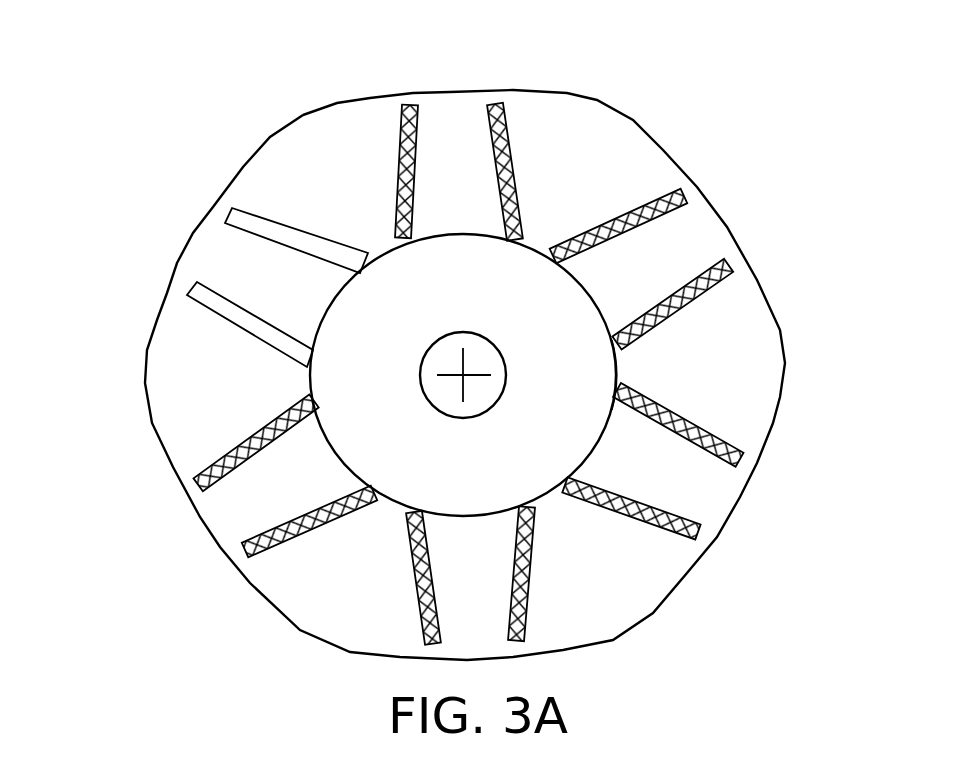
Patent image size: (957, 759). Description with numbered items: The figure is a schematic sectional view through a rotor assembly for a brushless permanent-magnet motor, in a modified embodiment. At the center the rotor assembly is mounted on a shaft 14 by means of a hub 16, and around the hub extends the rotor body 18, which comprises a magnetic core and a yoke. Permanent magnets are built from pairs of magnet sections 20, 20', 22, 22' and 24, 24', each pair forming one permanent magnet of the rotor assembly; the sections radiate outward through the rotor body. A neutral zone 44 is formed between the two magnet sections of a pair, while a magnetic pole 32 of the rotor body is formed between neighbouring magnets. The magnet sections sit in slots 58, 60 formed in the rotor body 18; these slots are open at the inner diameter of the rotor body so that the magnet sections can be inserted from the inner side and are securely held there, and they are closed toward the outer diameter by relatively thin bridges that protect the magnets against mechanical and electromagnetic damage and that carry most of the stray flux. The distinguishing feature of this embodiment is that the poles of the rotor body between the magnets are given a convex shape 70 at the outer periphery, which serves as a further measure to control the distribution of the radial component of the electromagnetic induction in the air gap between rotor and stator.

The shaft 14 is at (573, 329).
The hub 16 is at (741, 375).
The rotor body 18 is at (773, 363).
The magnet section 20 is at (679, 537).
The magnet section 20' is at (727, 441).
The magnet section 22 is at (716, 284).
The magnet section 22' is at (663, 202).
The magnet section 24 is at (505, 128).
The magnet section 24' is at (419, 133).
The magnetic pole 32 is at (684, 354).
The neutral zone 44 is at (702, 498).
The slot 58 is at (218, 202).
The slot 60 is at (178, 270).
The convex shape 70 is at (266, 131).